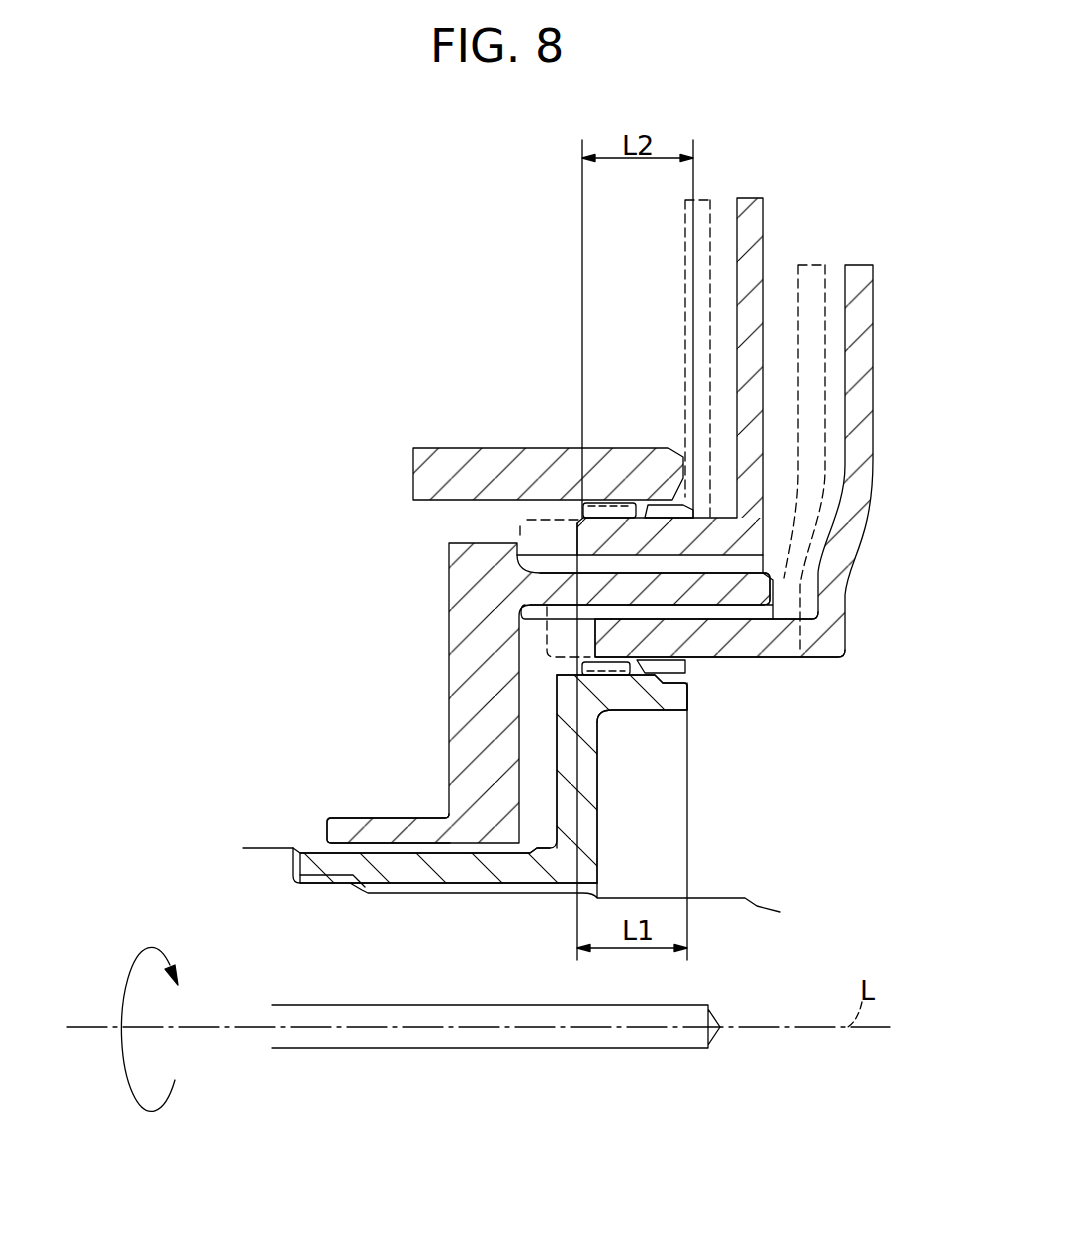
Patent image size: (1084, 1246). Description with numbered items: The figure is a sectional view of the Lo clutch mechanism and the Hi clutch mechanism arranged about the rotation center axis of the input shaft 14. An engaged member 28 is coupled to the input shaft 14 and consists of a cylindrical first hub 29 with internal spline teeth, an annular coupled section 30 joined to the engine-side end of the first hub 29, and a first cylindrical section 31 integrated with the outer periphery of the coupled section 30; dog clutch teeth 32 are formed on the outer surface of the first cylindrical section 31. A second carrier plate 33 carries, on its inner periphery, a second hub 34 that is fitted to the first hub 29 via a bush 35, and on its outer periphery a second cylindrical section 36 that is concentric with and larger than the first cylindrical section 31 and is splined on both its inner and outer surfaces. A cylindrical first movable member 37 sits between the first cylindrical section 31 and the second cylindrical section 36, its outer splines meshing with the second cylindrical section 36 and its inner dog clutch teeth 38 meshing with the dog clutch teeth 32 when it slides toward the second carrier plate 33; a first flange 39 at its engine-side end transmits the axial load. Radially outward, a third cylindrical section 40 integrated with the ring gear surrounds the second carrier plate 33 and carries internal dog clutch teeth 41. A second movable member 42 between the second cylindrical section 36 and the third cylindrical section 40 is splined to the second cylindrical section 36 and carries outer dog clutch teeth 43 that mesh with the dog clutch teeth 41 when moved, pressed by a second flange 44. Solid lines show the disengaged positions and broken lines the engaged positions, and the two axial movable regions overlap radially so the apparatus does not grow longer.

The input shaft 14 is at (723, 1095).
The engaged member 28 is at (511, 813).
The first hub 29 is at (455, 868).
The coupled section 30 is at (590, 808).
The first cylindrical section 31 is at (675, 707).
The dog clutch teeth 32 is at (607, 672).
The second carrier plate 33 is at (618, 693).
The second hub 34 is at (386, 832).
The bush 35 is at (300, 822).
The second cylindrical section 36 is at (765, 591).
The first movable member 37 is at (775, 640).
The dog clutch teeth 38 is at (688, 668).
The first flange 39 is at (766, 486).
The third cylindrical section 40 is at (515, 470).
The dog clutch teeth 41 is at (616, 510).
The second movable member 42 is at (600, 540).
The dog clutch teeth 43 is at (668, 512).
The second flange 44 is at (750, 220).